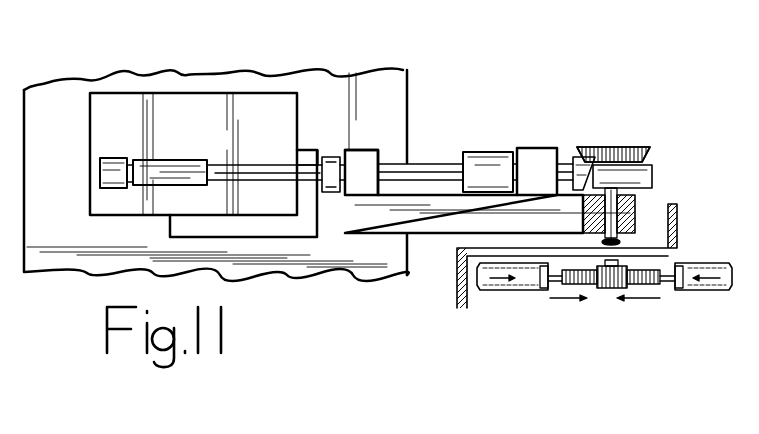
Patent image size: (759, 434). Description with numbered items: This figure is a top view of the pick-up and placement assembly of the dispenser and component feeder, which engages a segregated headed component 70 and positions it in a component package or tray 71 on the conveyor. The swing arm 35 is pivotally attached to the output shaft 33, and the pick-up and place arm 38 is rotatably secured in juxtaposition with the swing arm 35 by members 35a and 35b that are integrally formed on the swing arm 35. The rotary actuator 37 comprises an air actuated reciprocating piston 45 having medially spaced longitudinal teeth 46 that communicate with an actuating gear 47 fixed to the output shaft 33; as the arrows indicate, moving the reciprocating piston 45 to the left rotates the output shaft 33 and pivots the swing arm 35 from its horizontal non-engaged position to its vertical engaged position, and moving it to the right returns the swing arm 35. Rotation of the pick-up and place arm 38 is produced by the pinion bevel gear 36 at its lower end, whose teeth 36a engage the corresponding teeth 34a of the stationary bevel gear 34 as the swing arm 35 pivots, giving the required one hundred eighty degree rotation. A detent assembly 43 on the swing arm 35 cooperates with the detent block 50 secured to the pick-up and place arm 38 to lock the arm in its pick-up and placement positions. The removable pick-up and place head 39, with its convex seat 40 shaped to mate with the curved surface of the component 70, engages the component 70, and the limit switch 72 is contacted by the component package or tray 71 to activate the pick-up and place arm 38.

The component package or tray 71 is at (252, 105).
The limit switch 72 is at (308, 154).
The headed component 70 is at (100, 173).
The pick-up and place head 39 is at (143, 185).
The pick-up and place arm 38 is at (253, 174).
The swing arm 35 is at (375, 223).
The member 35a is at (365, 158).
The member 35b is at (542, 155).
The detent assembly 43 is at (487, 197).
The detent block 50 is at (483, 162).
The pinion bevel gear 36 is at (577, 163).
The teeth 36a is at (603, 147).
The stationary bevel gear 34 is at (612, 148).
The teeth 34a is at (643, 155).
The output shaft 33 is at (635, 207).
The convex seat 40 is at (457, 297).
The rotary actuator 37 is at (498, 292).
The actuating gear 47 is at (604, 292).
The longitudinal teeth 46 is at (643, 287).
The reciprocating piston 45 is at (670, 288).